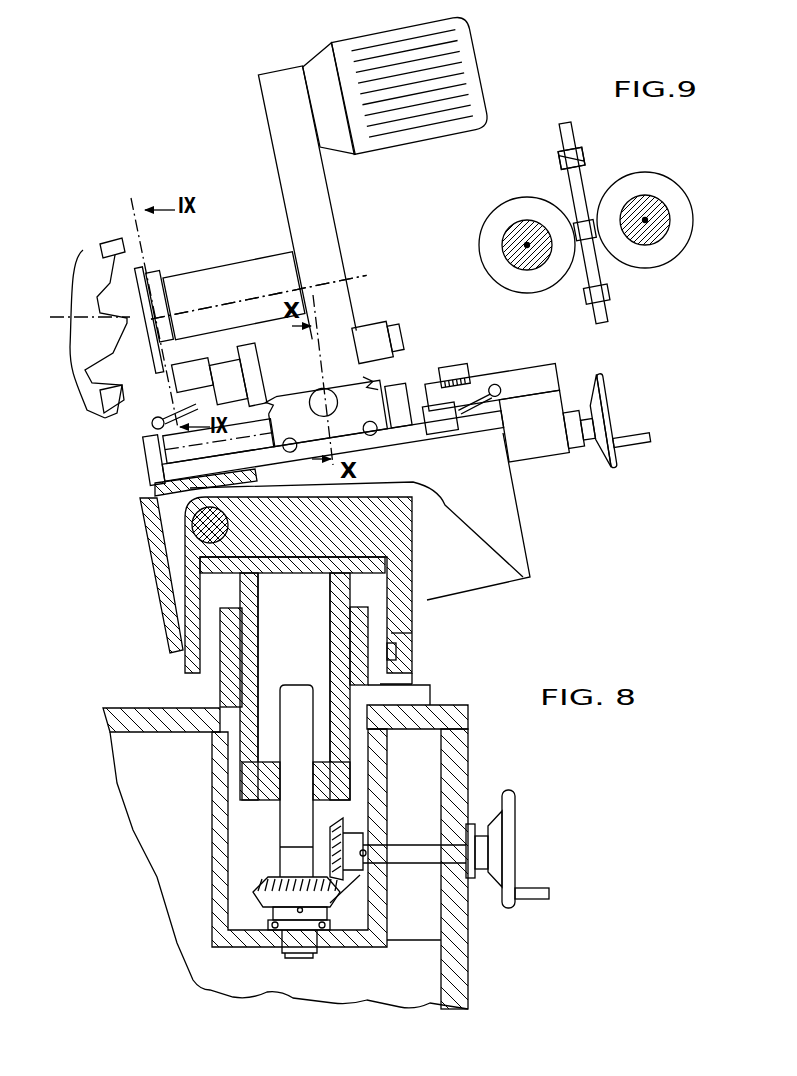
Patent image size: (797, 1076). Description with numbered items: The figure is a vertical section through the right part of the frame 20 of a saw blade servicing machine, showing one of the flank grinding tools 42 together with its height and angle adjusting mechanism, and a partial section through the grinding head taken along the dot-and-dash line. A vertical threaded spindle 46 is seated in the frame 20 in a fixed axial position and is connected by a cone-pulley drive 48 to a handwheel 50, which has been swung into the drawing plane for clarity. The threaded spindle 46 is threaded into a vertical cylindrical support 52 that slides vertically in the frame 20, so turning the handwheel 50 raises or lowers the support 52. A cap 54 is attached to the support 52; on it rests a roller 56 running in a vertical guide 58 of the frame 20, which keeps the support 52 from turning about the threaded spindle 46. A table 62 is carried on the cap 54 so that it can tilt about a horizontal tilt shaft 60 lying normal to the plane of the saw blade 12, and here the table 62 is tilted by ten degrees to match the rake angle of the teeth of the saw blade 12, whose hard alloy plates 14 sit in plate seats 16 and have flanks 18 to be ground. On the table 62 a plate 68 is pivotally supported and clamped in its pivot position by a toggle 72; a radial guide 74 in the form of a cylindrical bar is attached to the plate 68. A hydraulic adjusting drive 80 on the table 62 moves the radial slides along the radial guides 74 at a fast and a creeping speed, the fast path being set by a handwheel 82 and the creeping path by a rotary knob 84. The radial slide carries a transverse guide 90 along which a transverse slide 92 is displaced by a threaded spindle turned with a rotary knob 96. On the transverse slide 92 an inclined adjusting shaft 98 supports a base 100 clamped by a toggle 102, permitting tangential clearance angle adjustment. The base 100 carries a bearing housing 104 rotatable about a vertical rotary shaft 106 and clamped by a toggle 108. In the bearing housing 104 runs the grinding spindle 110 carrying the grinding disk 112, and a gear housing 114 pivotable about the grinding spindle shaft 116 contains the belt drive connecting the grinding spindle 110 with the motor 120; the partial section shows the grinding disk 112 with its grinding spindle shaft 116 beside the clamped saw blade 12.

In FIG. 9, the saw blade 12 is at (572, 125).
In FIG. 8, the saw blade 12 is at (78, 272).
In FIG. 9, the hard alloy plates 14 is at (557, 162).
In FIG. 8, the hard alloy plates 14 is at (107, 245).
In FIG. 9, the plate seats 16 is at (578, 158).
In FIG. 8, the plate seats 16 is at (100, 400).
In FIG. 9, the flanks 18 is at (586, 292).
In FIG. 8, the frame 20 is at (455, 985).
In FIG. 8, the flank grinding tool 42 is at (210, 103).
In FIG. 8, the vertical threaded spindle 46 is at (293, 820).
In FIG. 8, the cone-pulley drive 48 is at (346, 900).
In FIG. 8, the handwheel 50 is at (500, 820).
In FIG. 8, the cylindrical support 52 is at (250, 686).
In FIG. 8, the cap 54 is at (400, 535).
In FIG. 8, the roller 56 is at (398, 650).
In FIG. 8, the vertical guide 58 is at (400, 684).
In FIG. 8, the tilt shaft 60 is at (200, 528).
In FIG. 8, the table 62 is at (140, 510).
In FIG. 8, the plate 68 is at (437, 438).
In FIG. 8, the toggle 72 is at (572, 380).
In FIG. 8, the radial guide 74 is at (150, 470).
In FIG. 8, the hydraulic adjusting drive 80 is at (548, 370).
In FIG. 8, the handwheel 82 is at (618, 400).
In FIG. 8, the rotary knob 84 is at (468, 369).
In FIG. 8, the transverse guide 90 is at (358, 382).
In FIG. 8, the transverse slide 92 is at (292, 400).
In FIG. 8, the rotary knob 96 is at (398, 385).
In FIG. 8, the inclined adjusting shaft 98 is at (405, 340).
In FIG. 8, the base 100 is at (187, 362).
In FIG. 8, the toggle 102 is at (390, 326).
In FIG. 8, the bearing housing 104 is at (262, 277).
In FIG. 8, the rotary shaft 106 is at (207, 362).
In FIG. 8, the toggle 108 is at (152, 418).
In FIG. 8, the grinding spindle 110 is at (160, 303).
In FIG. 9, the grinding disk 112 is at (507, 210).
In FIG. 8, the grinding disk 112 is at (150, 292).
In FIG. 8, the gear housing 114 is at (313, 196).
In FIG. 9, the grinding spindle shaft 116 is at (527, 245).
In FIG. 8, the grinding spindle shaft 116 is at (345, 283).
In FIG. 8, the motor 120 is at (490, 36).